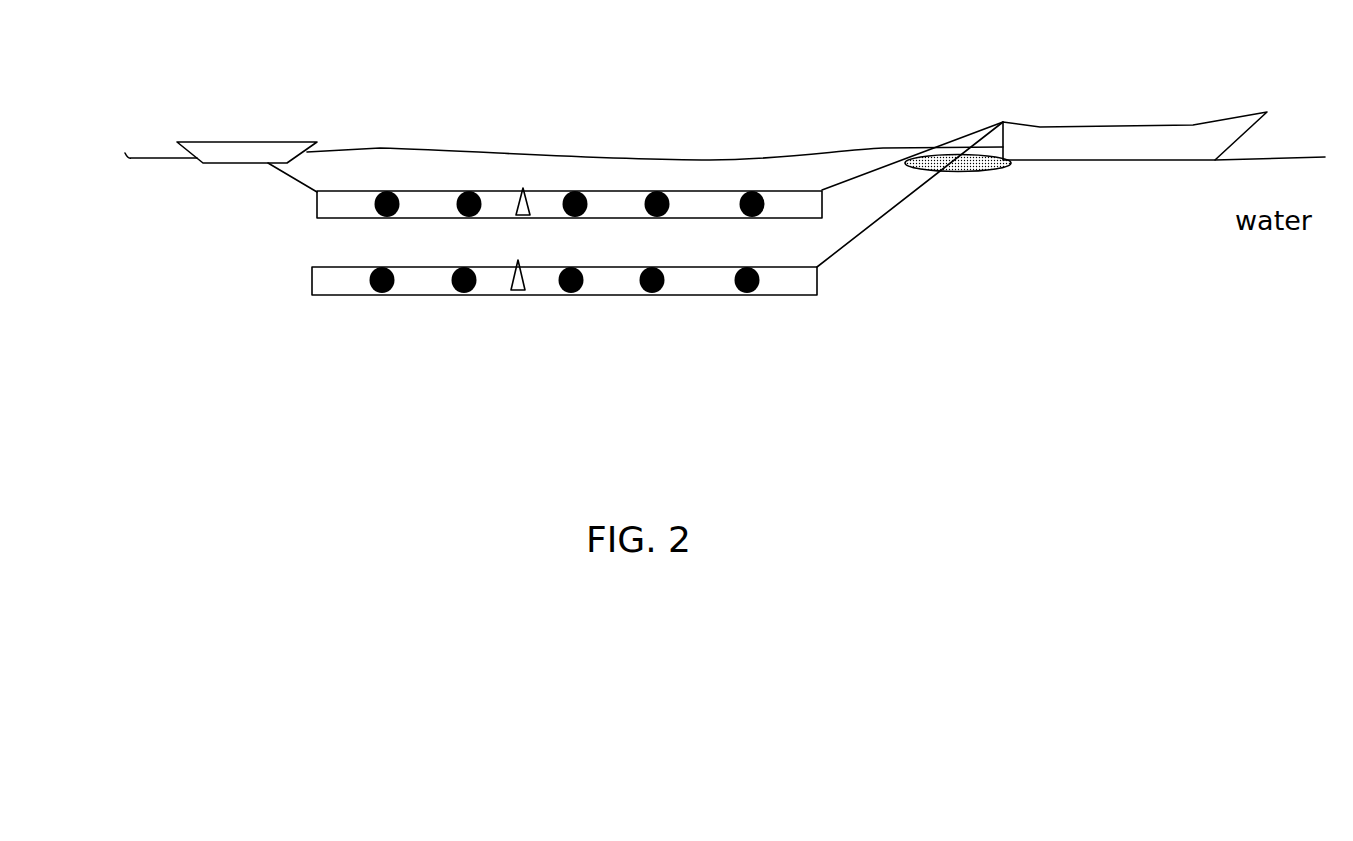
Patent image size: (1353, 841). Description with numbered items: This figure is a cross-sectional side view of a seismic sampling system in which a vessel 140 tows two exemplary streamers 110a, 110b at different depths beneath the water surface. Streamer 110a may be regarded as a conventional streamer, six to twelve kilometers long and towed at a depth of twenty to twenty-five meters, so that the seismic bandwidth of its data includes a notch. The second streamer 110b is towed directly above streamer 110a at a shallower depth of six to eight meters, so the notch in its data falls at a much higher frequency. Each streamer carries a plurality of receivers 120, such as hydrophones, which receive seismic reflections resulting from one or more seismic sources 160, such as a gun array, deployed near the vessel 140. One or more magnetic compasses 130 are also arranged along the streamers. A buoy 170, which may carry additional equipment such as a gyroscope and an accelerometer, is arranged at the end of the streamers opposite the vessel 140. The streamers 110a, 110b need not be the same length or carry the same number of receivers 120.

The streamer 110a is at (310, 280).
The second streamer 110b is at (315, 203).
The receivers 120 is at (468, 188).
The magnetic compasses 130 is at (525, 187).
The vessel 140 is at (1118, 118).
The seismic sources 160 is at (973, 171).
The buoy 170 is at (237, 127).